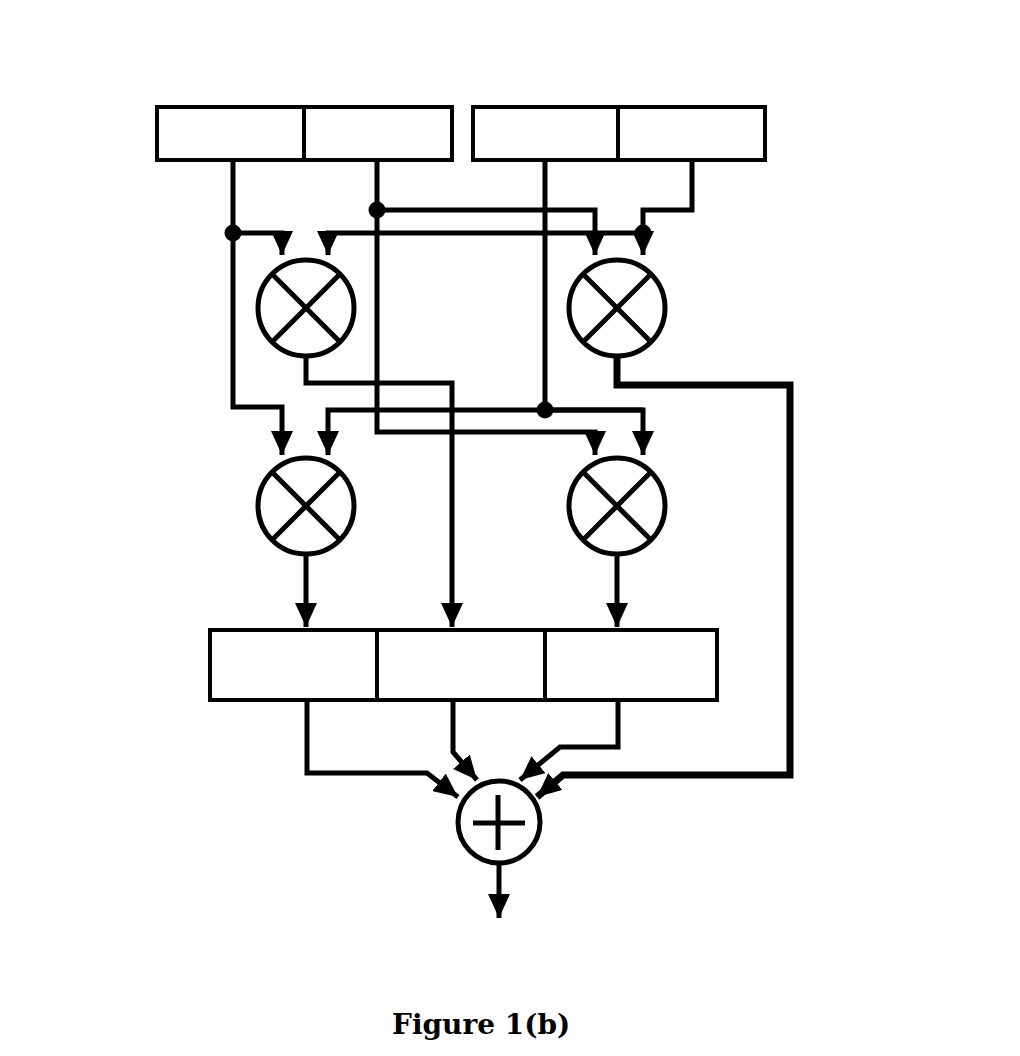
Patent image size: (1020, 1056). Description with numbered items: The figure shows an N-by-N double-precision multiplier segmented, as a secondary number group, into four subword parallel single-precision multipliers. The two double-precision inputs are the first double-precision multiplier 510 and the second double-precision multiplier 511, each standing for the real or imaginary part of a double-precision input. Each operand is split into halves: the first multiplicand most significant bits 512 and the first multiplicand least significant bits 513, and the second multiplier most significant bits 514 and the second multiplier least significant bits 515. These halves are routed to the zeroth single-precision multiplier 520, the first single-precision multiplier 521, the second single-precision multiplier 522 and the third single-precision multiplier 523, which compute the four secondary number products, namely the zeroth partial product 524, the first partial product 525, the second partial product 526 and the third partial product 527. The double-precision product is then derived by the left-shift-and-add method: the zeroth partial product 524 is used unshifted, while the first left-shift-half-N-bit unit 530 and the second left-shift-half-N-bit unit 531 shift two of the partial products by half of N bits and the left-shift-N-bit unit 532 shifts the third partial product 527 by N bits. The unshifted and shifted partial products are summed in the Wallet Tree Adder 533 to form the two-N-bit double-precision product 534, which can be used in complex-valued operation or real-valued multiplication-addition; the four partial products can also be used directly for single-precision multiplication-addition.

The AX double-precision multiplier 510 is at (283, 70).
The BX double-precision multiplier 511 is at (643, 70).
The AXH double-precision multiplier high position 512 is at (185, 133).
The AXL double-precision multiplier low position 513 is at (427, 133).
The BXH double-precision multiplier high position 514 is at (498, 133).
The BXL double-precision multiplier low position 515 is at (740, 133).
The SM0 single-precision multiplier 520 is at (672, 282).
The SM1 single-precision multiplier 521 is at (258, 290).
The SM2 single-precision multiplier 522 is at (672, 497).
The SM3 single-precision multiplier 523 is at (258, 487).
The pp0 partial product 524 is at (740, 568).
The pp1 partial product 525 is at (545, 580).
The pp2 partial product 526 is at (417, 557).
The pp3 partial product 527 is at (245, 568).
The SH0 left-shift-N/2-bit unit 530 is at (692, 665).
The SH1 left-shift-N/2-bit unit 531 is at (405, 678).
The left-shift-N-bit unit 532 is at (238, 678).
The Wallet Tree Adder 533 is at (447, 827).
The AX × BX double-precision product 534 is at (358, 895).